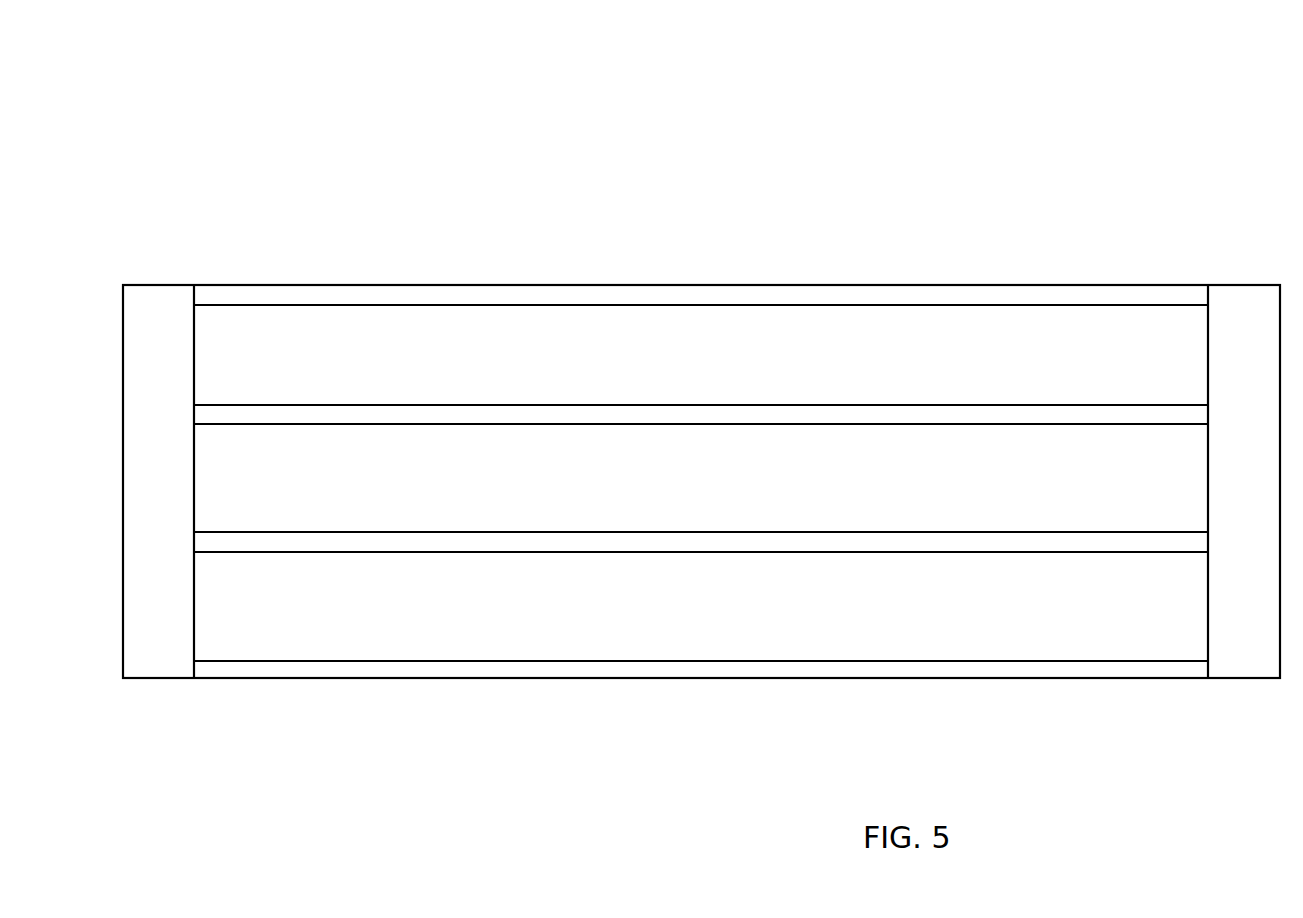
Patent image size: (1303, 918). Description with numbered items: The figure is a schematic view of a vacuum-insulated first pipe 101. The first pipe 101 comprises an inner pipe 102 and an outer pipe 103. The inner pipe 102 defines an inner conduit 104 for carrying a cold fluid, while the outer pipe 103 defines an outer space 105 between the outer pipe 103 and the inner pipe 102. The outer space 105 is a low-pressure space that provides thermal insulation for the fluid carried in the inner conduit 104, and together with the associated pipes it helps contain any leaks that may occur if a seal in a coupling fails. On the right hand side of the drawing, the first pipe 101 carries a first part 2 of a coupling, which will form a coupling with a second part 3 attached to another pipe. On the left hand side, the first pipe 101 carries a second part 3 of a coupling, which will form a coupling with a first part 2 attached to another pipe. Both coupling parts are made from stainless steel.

The first pipe 101 is at (408, 237).
The inner pipe 102 is at (736, 542).
The outer pipe 103 is at (700, 293).
The inner conduit 104 is at (986, 478).
The outer space 105 is at (930, 350).
The first part 2 is at (1235, 295).
The second part 3 is at (155, 658).